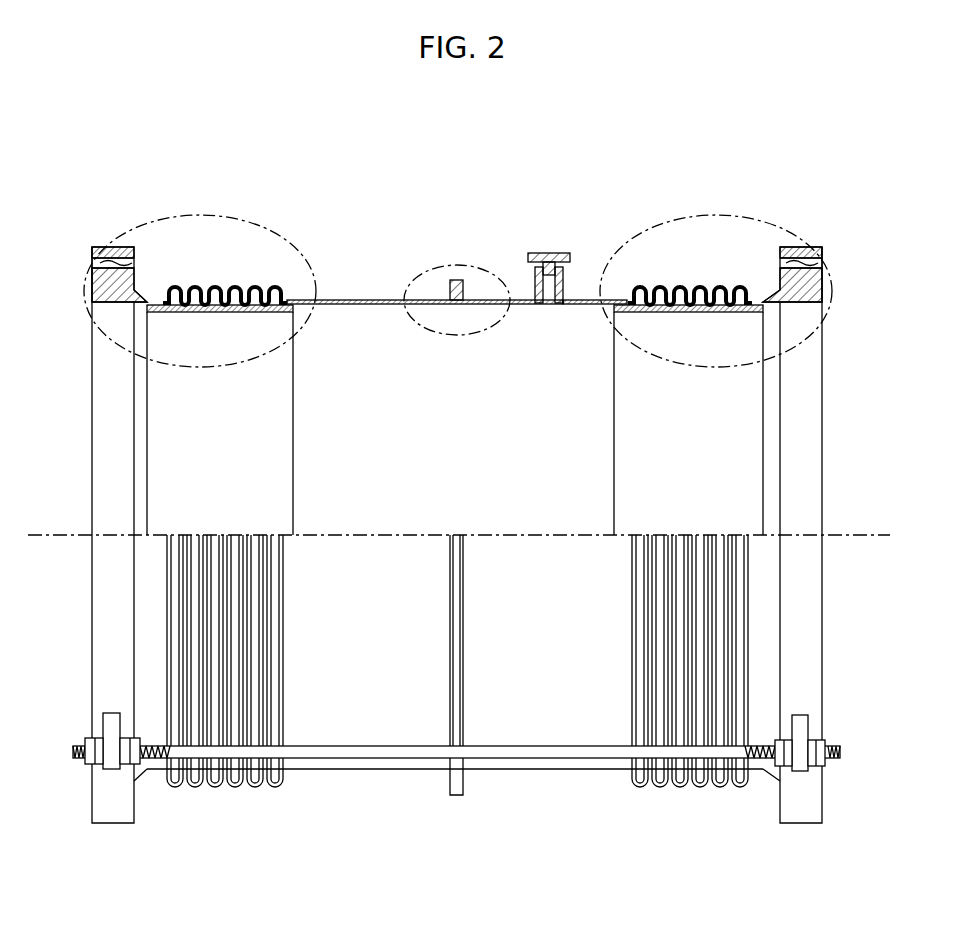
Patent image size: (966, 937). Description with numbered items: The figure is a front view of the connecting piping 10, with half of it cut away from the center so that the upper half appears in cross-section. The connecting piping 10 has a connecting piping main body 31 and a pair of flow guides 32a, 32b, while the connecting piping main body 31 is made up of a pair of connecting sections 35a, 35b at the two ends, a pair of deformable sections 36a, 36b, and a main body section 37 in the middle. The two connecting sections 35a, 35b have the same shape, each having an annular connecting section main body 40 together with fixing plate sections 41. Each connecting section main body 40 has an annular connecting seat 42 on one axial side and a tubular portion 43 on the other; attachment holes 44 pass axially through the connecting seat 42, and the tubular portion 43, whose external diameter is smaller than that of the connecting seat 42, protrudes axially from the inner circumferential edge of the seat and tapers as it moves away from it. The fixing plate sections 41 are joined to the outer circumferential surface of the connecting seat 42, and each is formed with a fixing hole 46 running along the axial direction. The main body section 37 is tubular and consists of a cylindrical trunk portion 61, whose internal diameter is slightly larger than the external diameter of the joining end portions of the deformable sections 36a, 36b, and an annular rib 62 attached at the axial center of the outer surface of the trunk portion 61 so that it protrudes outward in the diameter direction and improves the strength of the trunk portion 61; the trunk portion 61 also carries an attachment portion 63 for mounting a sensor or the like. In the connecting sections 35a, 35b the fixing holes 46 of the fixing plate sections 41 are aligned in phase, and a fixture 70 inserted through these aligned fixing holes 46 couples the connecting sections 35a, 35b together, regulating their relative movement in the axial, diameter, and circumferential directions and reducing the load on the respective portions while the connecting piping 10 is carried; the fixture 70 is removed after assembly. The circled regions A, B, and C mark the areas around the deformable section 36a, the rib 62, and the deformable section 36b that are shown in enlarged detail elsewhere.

The connecting piping 10 is at (866, 184).
The connecting piping main body 31 is at (847, 441).
The flow guide 32a is at (686, 326).
The flow guide 32b is at (229, 326).
The connecting section 35a is at (800, 238).
The connecting section 35b is at (118, 238).
The deformable section 36a is at (680, 276).
The deformable section 36b is at (212, 276).
The main body section 37 is at (590, 290).
The connecting section main body 40 is at (103, 688).
The fixing plate section 41 is at (112, 727).
The connecting seat 42 is at (124, 285).
The tubular portion 43 is at (152, 302).
The attachment hole 44 is at (112, 256).
The fixing hole 46 is at (97, 758).
The trunk portion 61 is at (382, 300).
The rib 62 is at (456, 280).
The attachment portion 63 is at (536, 276).
The fixture 70 is at (405, 760).
The region A is at (650, 216).
The region B is at (433, 268).
The region C is at (270, 216).